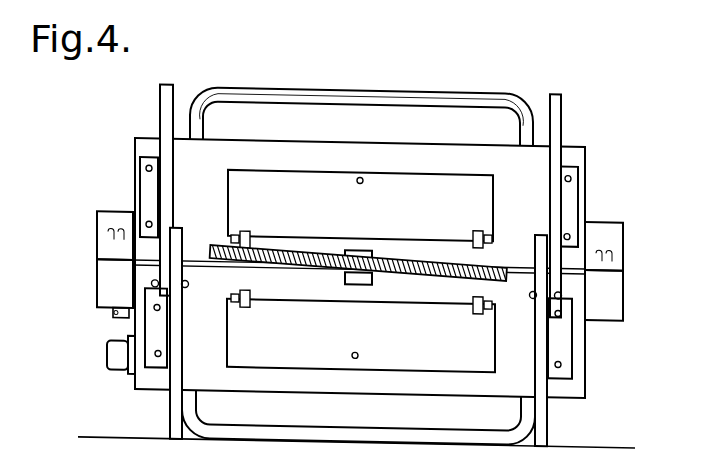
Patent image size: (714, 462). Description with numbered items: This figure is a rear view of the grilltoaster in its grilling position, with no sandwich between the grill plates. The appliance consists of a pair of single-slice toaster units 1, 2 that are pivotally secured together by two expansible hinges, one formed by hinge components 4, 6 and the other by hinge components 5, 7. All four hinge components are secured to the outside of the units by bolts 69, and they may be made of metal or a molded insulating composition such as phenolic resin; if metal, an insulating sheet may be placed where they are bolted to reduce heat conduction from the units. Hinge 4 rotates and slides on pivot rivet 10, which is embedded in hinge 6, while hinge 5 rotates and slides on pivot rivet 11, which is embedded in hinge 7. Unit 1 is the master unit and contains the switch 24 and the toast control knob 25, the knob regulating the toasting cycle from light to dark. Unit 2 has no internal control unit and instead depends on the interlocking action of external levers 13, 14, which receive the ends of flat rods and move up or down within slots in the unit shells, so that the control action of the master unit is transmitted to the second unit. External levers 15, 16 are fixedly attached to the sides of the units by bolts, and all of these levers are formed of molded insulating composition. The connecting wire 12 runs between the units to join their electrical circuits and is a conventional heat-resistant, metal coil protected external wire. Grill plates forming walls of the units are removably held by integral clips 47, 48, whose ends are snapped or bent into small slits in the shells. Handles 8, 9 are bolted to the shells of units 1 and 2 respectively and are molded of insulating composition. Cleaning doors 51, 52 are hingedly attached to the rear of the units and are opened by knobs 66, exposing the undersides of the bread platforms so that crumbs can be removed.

The single-slice toaster unit 1 is at (573, 336).
The single-slice toaster unit 2 is at (588, 194).
The expansible hinge component 4 is at (170, 411).
The expansible hinge component 5 is at (548, 412).
The expansible hinge component 6 is at (160, 97).
The expansible hinge component 7 is at (562, 92).
The handle 8 is at (352, 432).
The handle 9 is at (363, 88).
The pivot rivet 10 is at (189, 283).
The pivot rivet 11 is at (530, 288).
The connecting wire 12 is at (417, 270).
The external lever 13 is at (97, 282).
The external lever 14 is at (97, 230).
The external lever 15 is at (624, 286).
The external lever 16 is at (624, 233).
The switch 24 is at (112, 314).
The toast control knob 25 is at (107, 352).
The clip 47 is at (374, 250).
The clip 48 is at (345, 276).
The cleaning door 51 is at (355, 357).
The cleaning door 52 is at (376, 184).
The knob 66 is at (357, 179).
The bolt 69 is at (146, 168).